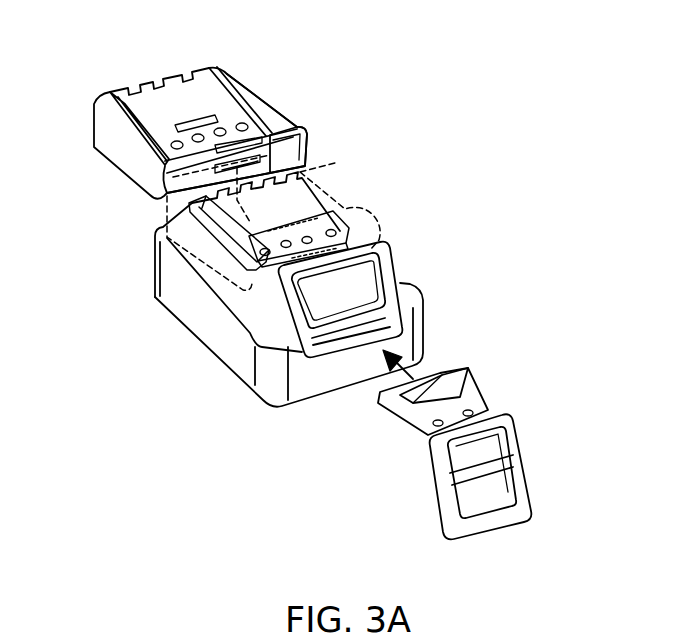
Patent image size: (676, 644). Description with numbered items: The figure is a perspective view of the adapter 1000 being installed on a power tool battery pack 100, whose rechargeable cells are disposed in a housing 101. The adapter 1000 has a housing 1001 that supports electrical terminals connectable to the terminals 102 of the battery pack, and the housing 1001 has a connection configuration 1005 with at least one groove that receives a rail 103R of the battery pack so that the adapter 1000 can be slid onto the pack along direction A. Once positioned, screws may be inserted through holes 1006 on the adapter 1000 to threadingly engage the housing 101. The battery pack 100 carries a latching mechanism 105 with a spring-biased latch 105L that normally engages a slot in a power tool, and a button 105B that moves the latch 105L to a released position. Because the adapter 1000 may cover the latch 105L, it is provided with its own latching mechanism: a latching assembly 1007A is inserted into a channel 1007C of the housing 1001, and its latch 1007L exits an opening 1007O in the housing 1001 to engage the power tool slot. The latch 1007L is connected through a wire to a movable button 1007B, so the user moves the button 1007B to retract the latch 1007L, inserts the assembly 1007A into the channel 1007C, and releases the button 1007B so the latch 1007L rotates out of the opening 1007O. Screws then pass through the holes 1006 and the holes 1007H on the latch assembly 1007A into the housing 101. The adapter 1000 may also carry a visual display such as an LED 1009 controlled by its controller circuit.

The direction A is at (183, 99).
The power tool battery pack 100 is at (285, 297).
The housing 101 is at (237, 333).
The terminals 102 is at (312, 174).
The rail 103R is at (215, 235).
The latching mechanism 105 is at (348, 230).
The button 105B is at (338, 324).
The latch 105L is at (242, 252).
The adapter 1000 is at (253, 89).
The housing 1001 is at (117, 158).
The connection configuration 1005 is at (140, 187).
The holes 1006 is at (240, 112).
The latching assembly 1007A is at (502, 444).
The button 1007B is at (512, 468).
The channel 1007C is at (301, 131).
The holes 1007H is at (473, 412).
The latch 1007L is at (450, 383).
The opening 1007O is at (198, 118).
The LED 1009 is at (273, 123).